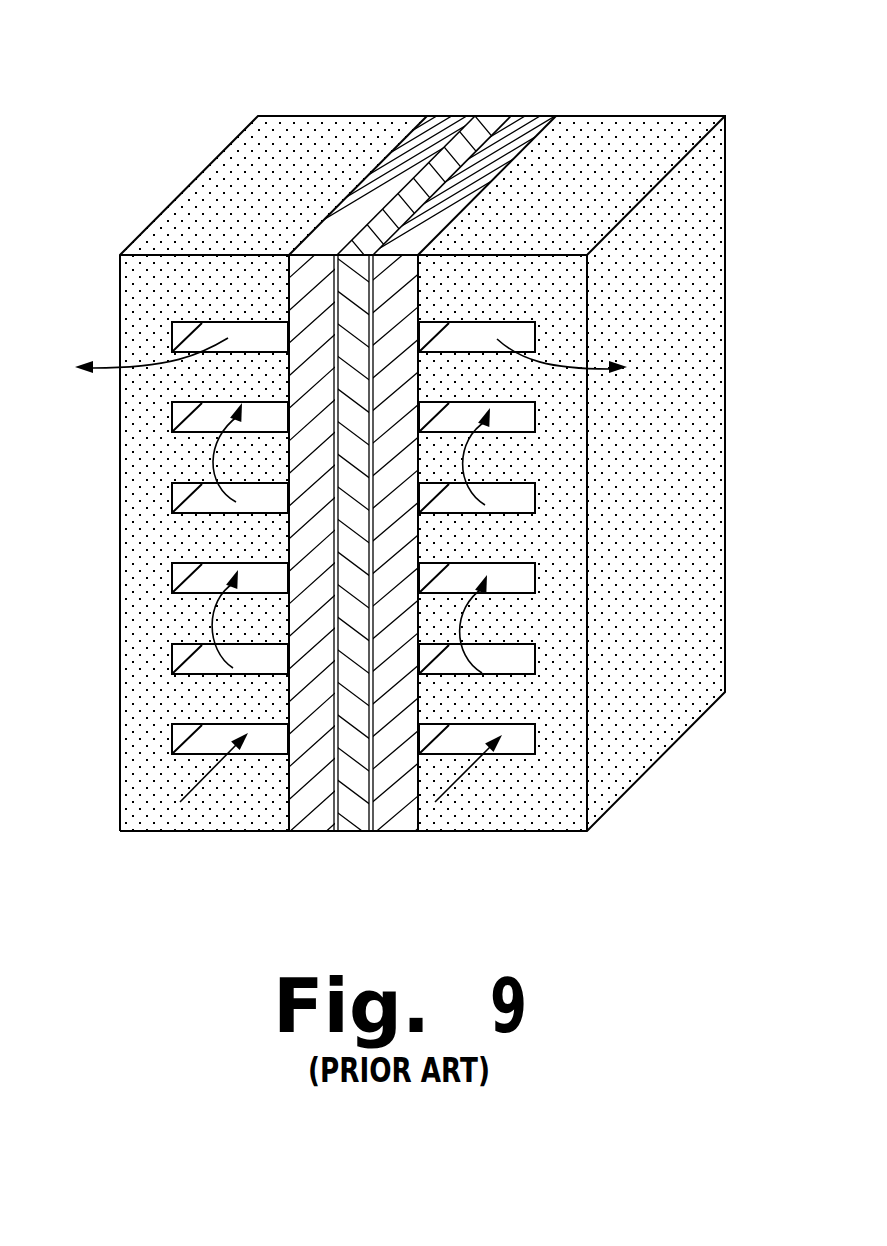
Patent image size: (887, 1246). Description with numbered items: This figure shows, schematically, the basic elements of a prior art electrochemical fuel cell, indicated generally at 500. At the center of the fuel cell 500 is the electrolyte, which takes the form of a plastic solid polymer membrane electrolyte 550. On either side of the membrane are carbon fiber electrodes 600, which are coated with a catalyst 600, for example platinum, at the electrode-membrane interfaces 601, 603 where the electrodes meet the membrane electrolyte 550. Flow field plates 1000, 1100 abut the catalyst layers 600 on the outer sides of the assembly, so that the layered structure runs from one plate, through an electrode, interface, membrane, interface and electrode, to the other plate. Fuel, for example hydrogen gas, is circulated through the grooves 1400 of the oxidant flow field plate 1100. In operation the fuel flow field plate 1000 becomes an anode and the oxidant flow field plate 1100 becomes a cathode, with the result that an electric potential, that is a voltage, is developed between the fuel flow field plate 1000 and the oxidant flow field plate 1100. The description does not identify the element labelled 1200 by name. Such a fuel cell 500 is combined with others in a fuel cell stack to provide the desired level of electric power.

The fuel cell 500 is at (545, 87).
The solid polymer membrane electrolyte 550 is at (495, 118).
The carbon fiber electrodes 600 is at (443, 116).
The electrode-membrane interface 601 is at (458, 130).
The electrode-membrane interface 603 is at (500, 135).
The fuel flow field plate 1000 is at (702, 292).
The oxidant flow field plate 1100 is at (207, 168).
The front face region 1200 is at (517, 665).
The grooves 1400 is at (203, 746).